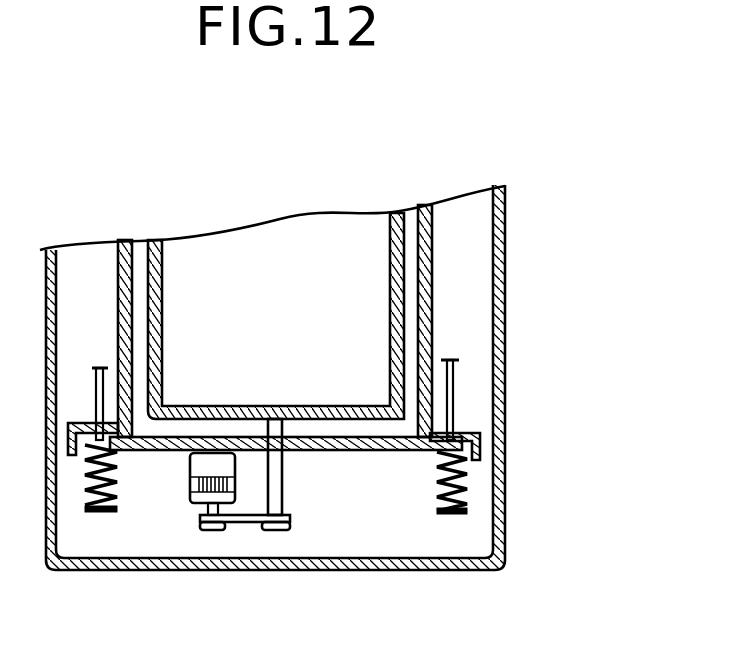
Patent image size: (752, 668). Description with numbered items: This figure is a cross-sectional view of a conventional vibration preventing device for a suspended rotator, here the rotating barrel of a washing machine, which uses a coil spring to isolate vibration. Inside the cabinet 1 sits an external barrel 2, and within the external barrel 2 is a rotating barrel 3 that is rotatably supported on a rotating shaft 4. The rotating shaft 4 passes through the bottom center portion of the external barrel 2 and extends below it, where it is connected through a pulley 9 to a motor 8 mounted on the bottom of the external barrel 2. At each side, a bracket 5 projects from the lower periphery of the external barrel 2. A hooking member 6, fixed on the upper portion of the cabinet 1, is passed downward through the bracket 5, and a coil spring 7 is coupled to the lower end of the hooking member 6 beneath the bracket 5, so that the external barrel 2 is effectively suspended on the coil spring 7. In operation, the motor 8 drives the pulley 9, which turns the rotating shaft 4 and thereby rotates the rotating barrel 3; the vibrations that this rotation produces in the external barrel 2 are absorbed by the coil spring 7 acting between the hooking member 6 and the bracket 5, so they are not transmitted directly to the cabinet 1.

The cabinet 1 is at (503, 275).
The external barrel 2 is at (433, 228).
The rotating barrel 3 is at (405, 332).
The rotating shaft 4 is at (285, 493).
The bracket 5 is at (480, 457).
The hooking member 6 is at (452, 400).
The coil spring 7 is at (463, 493).
The motor 8 is at (200, 495).
The pulley 9 is at (250, 523).